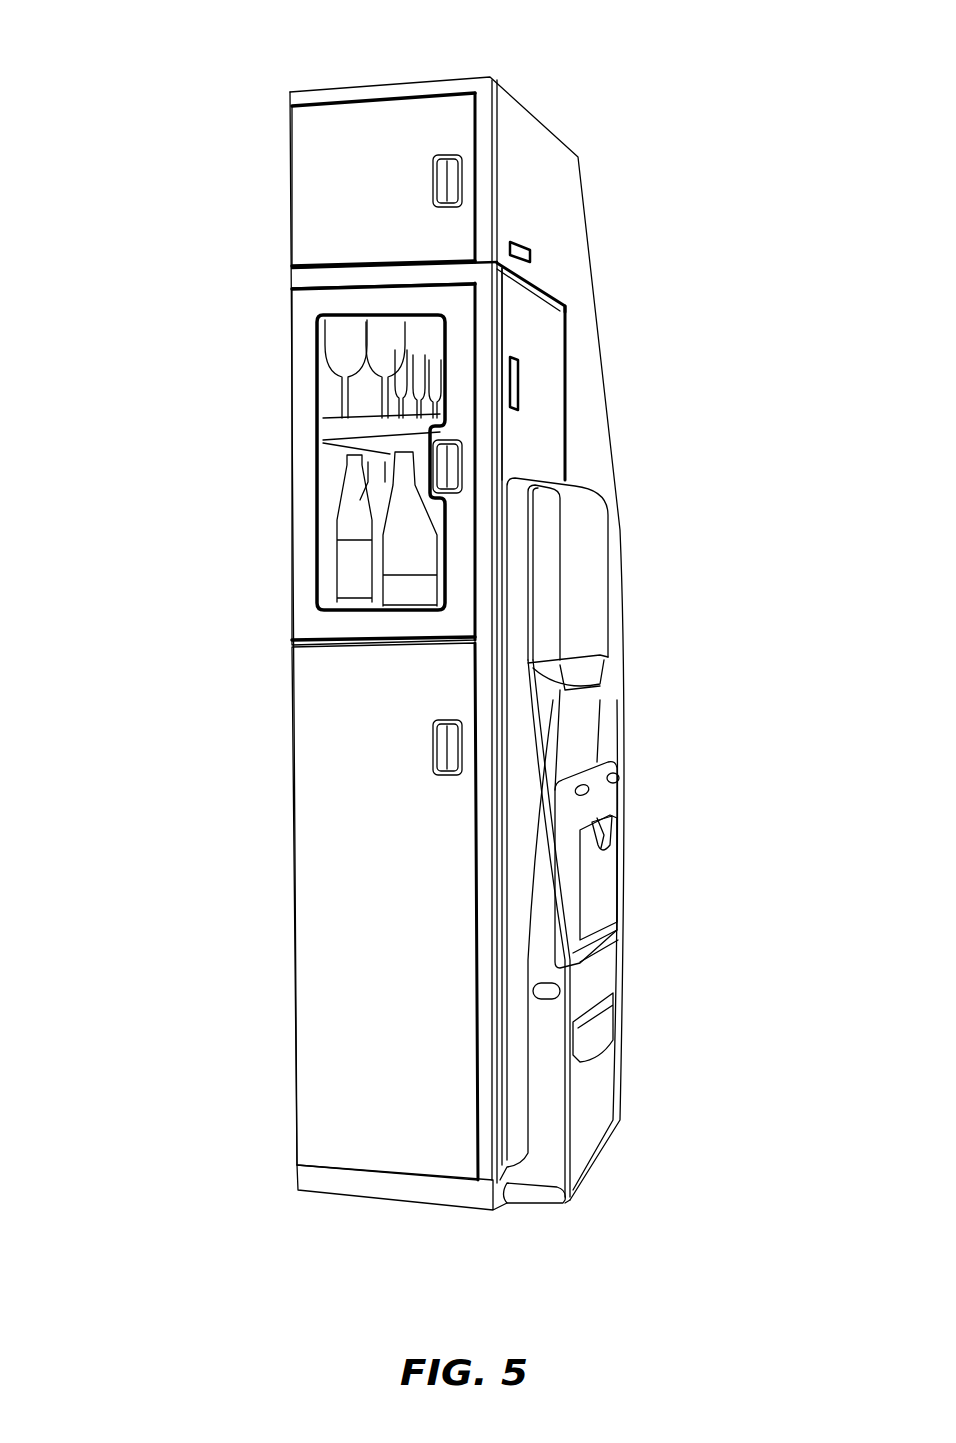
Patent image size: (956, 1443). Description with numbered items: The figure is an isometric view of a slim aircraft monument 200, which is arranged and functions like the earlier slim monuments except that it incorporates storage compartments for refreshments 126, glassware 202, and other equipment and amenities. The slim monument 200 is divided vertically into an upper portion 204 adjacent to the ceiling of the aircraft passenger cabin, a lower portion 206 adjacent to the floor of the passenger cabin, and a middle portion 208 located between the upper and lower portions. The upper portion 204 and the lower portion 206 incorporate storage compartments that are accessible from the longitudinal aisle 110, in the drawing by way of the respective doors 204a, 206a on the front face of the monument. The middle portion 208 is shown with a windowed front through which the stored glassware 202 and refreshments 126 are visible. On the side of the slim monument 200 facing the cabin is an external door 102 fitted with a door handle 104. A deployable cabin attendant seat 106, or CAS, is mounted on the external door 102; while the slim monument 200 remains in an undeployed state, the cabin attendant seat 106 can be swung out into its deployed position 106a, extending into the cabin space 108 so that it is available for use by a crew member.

The slim monument 200 is at (113, 82).
The upper portion 204 is at (269, 144).
The door 204a is at (357, 140).
The middle portion 208 is at (268, 464).
The glassware 202 is at (343, 345).
The refreshments 126 is at (343, 568).
The lower portion 206 is at (277, 911).
The door 206a is at (318, 855).
The longitudinal aisle 110 is at (298, 1228).
The external door 102 is at (601, 373).
The door handle 104 is at (522, 380).
The deployable cabin attendant seat 106 is at (639, 837).
The deployed cabin attendant seat 106a is at (728, 1013).
The cabin space 108 is at (777, 1087).